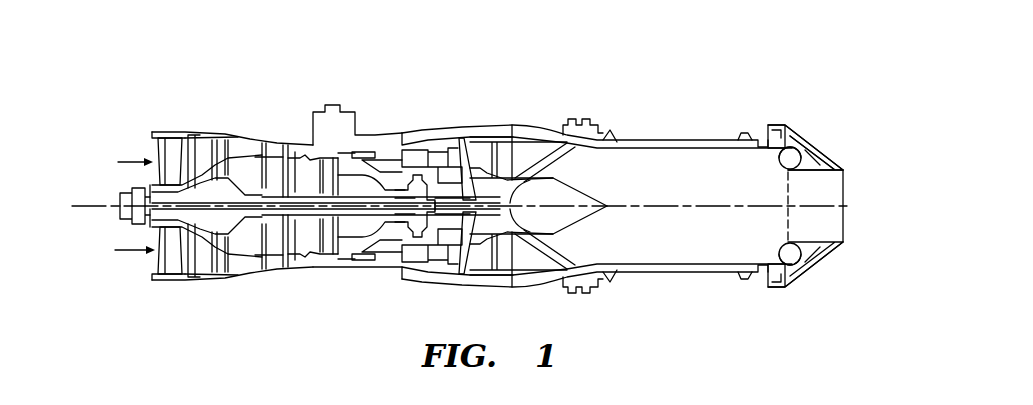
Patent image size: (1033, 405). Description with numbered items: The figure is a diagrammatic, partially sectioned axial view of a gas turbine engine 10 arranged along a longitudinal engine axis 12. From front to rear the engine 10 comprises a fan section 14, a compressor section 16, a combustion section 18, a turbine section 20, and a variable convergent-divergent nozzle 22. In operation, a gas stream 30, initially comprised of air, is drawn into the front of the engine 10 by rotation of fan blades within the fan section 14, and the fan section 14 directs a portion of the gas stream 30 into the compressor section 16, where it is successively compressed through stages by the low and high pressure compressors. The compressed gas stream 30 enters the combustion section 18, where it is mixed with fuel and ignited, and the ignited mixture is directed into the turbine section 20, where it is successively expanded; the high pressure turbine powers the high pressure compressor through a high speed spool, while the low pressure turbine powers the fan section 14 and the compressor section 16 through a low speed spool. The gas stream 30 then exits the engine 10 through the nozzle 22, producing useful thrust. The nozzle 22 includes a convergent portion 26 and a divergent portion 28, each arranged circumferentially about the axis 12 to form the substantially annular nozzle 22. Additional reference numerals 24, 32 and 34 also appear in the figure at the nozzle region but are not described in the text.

The gas turbine engine 10 is at (660, 72).
The longitudinal engine axis 12 is at (78, 212).
The fan section 14 is at (205, 92).
The compressor section 16 is at (378, 92).
The combustion section 18 is at (410, 92).
The turbine section 20 is at (520, 92).
The variable convergent-divergent nozzle 22 is at (843, 123).
The nozzle wall 24 is at (842, 149).
The convergent portion 26 is at (779, 158).
The divergent portion 28 is at (822, 188).
The gas stream 30 is at (128, 162).
The lower nozzle flap hinge 32 is at (787, 217).
The nozzle exit plane 34 is at (843, 226).